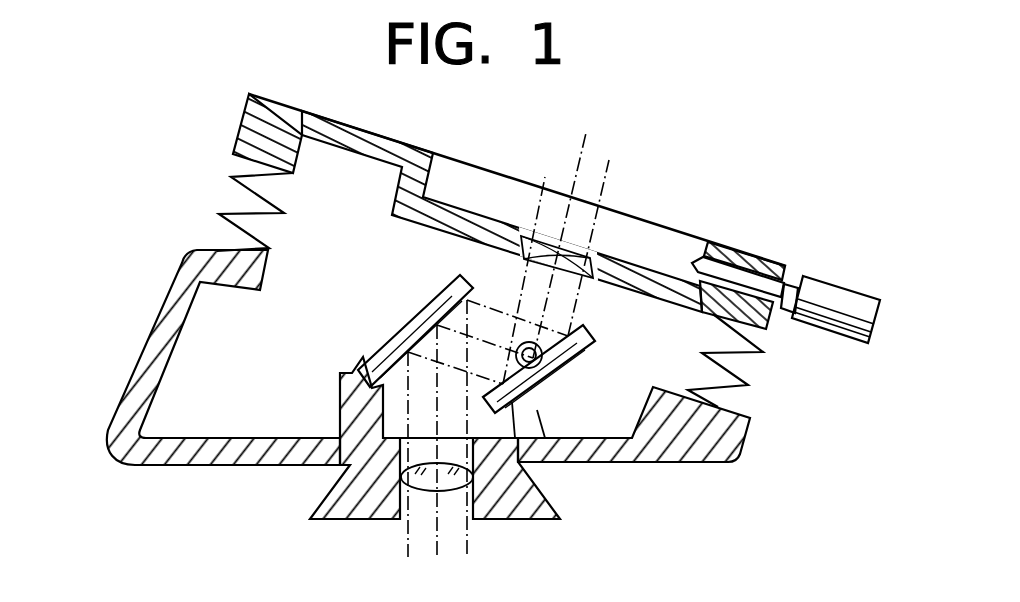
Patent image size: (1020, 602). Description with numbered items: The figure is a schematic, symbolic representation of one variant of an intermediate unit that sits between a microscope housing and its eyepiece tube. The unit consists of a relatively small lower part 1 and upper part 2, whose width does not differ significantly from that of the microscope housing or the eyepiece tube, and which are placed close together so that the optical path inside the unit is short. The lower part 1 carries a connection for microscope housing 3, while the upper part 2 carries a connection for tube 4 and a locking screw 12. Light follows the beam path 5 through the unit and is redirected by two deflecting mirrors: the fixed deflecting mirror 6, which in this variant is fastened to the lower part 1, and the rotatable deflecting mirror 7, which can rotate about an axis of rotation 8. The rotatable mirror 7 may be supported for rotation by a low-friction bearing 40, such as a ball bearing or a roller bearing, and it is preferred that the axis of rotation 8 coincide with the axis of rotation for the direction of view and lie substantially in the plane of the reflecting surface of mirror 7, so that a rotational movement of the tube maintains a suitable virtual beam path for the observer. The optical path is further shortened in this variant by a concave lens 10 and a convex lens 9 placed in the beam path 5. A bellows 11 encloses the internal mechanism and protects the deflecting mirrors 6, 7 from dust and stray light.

The lower part 1 is at (748, 437).
The upper part 2 is at (747, 249).
The connection for microscope housing 3 is at (333, 478).
The connection for tube 4 is at (637, 235).
The beam path 5 is at (547, 163).
The deflecting mirror, fixed 6 is at (392, 341).
The deflecting mirror, rotatable 7 is at (594, 348).
The axis of rotation 8 is at (537, 372).
The convex lens 9 is at (425, 490).
The concave lens 10 is at (550, 240).
The bellows 11 is at (243, 212).
The locking screw 12 is at (843, 287).
The low-friction bearing 40 is at (513, 385).